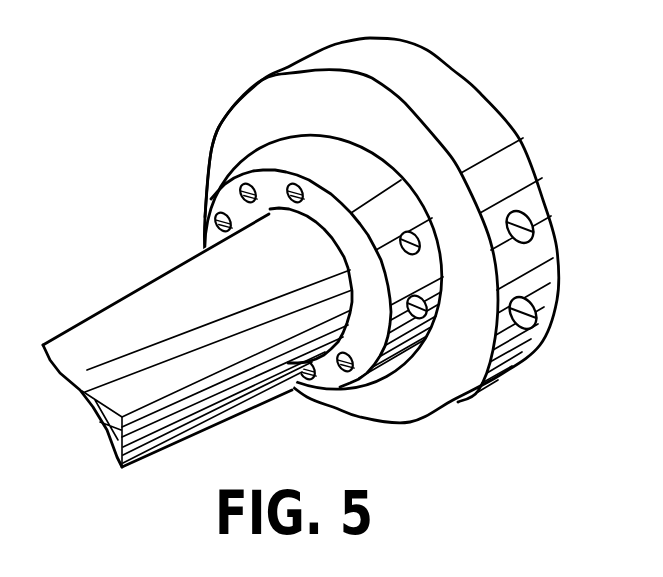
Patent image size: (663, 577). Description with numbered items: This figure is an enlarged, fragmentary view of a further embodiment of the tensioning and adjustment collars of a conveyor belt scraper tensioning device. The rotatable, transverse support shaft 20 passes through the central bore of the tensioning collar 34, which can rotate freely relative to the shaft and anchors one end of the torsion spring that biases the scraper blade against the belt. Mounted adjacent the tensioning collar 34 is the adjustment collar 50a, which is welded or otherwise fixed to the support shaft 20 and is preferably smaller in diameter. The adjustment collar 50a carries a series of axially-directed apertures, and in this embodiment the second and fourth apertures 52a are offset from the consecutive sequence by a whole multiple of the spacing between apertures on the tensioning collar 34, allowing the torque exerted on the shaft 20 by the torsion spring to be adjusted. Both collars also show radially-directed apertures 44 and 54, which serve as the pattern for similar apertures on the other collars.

The support shaft 20 is at (153, 307).
The tensioning collar 34 is at (467, 127).
The radially-directed apertures 44 is at (536, 230).
The adjustment collar 50a is at (224, 212).
The offset apertures 52a is at (293, 186).
The radially-directed apertures 54 is at (421, 304).